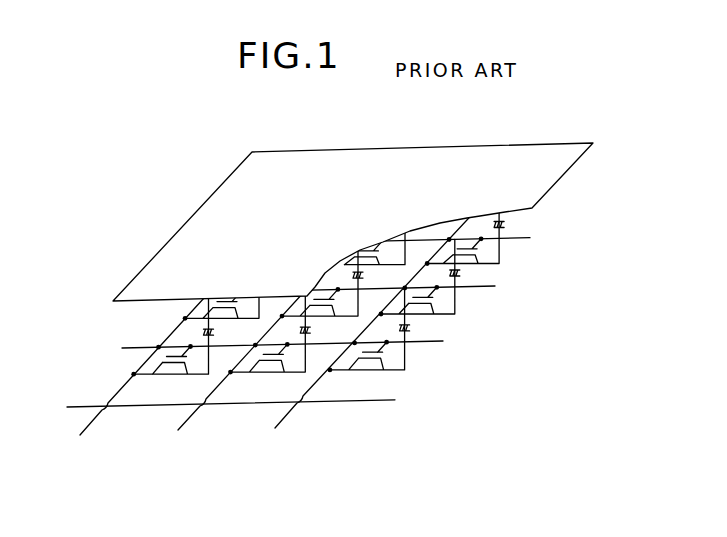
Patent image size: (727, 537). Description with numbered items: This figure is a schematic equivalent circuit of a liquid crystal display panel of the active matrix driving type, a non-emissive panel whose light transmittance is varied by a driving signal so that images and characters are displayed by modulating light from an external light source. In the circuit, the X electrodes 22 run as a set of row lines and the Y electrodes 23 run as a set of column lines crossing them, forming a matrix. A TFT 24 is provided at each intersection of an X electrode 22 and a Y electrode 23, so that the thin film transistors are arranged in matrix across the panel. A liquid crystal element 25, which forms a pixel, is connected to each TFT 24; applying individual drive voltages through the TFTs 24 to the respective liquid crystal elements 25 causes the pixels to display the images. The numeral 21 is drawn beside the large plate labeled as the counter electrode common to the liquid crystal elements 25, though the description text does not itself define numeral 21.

The counter electrode 21 is at (558, 173).
The X electrodes 22 is at (16, 430).
The Y electrodes 23 is at (288, 455).
The TFTs 24 is at (394, 375).
The liquid crystal elements 25 is at (480, 273).